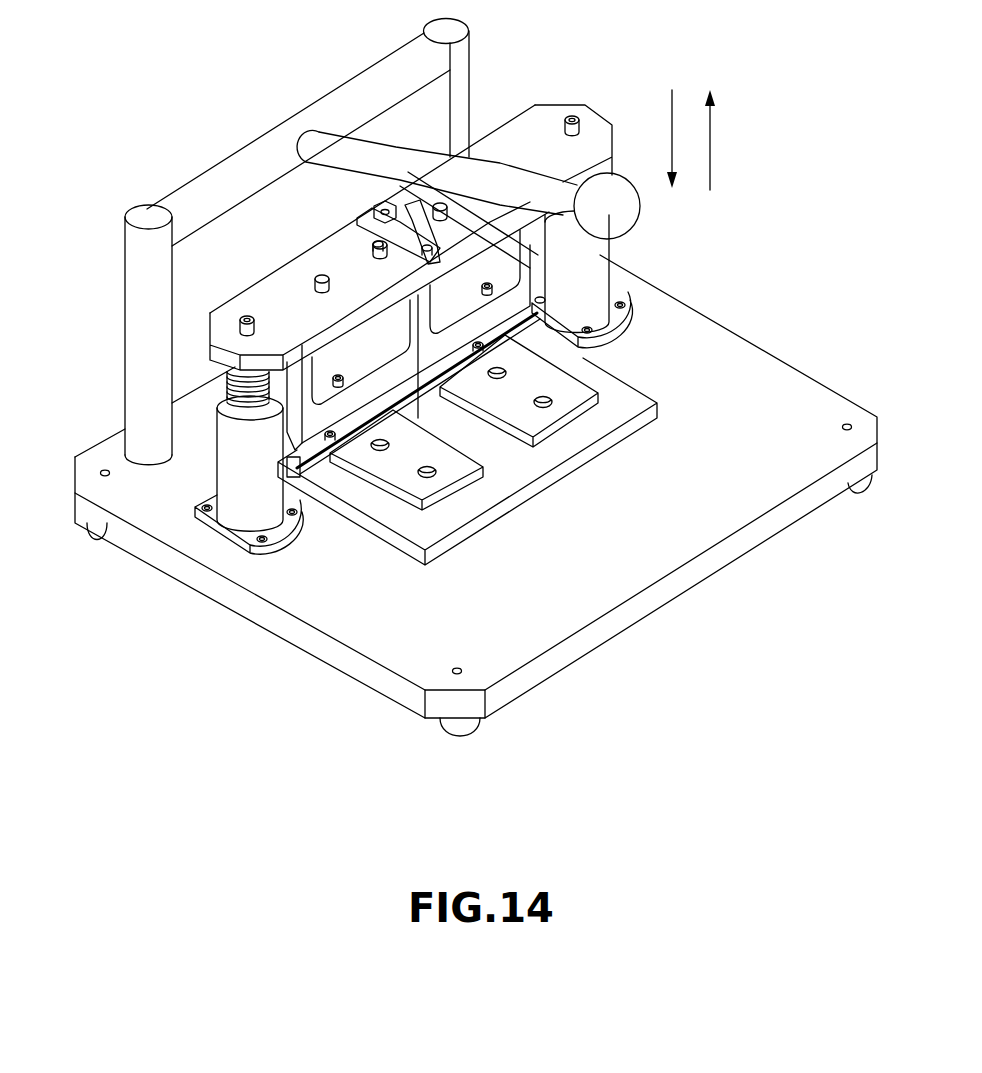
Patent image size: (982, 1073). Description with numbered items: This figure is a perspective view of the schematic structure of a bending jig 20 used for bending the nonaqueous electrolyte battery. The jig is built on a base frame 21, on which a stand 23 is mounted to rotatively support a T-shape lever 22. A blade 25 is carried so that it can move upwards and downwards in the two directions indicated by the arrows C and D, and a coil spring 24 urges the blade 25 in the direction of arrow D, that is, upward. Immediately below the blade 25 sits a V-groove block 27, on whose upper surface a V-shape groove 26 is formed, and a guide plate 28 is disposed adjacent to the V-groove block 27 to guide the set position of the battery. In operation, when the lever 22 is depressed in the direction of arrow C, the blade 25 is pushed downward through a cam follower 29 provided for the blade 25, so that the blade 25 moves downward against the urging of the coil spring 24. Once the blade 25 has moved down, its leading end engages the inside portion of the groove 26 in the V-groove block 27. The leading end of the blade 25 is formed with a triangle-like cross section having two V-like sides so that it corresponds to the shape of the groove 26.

The bending jig 20 is at (705, 286).
The base frame 21 is at (677, 542).
The T-shape lever 22 is at (430, 173).
The stand 23 is at (132, 338).
The coil spring 24 is at (227, 383).
The blade 25 is at (309, 460).
The V-shape groove 26 is at (340, 472).
The V-groove block 27 is at (322, 465).
The guide plate 28 is at (578, 398).
The cam follower 29 is at (370, 203).